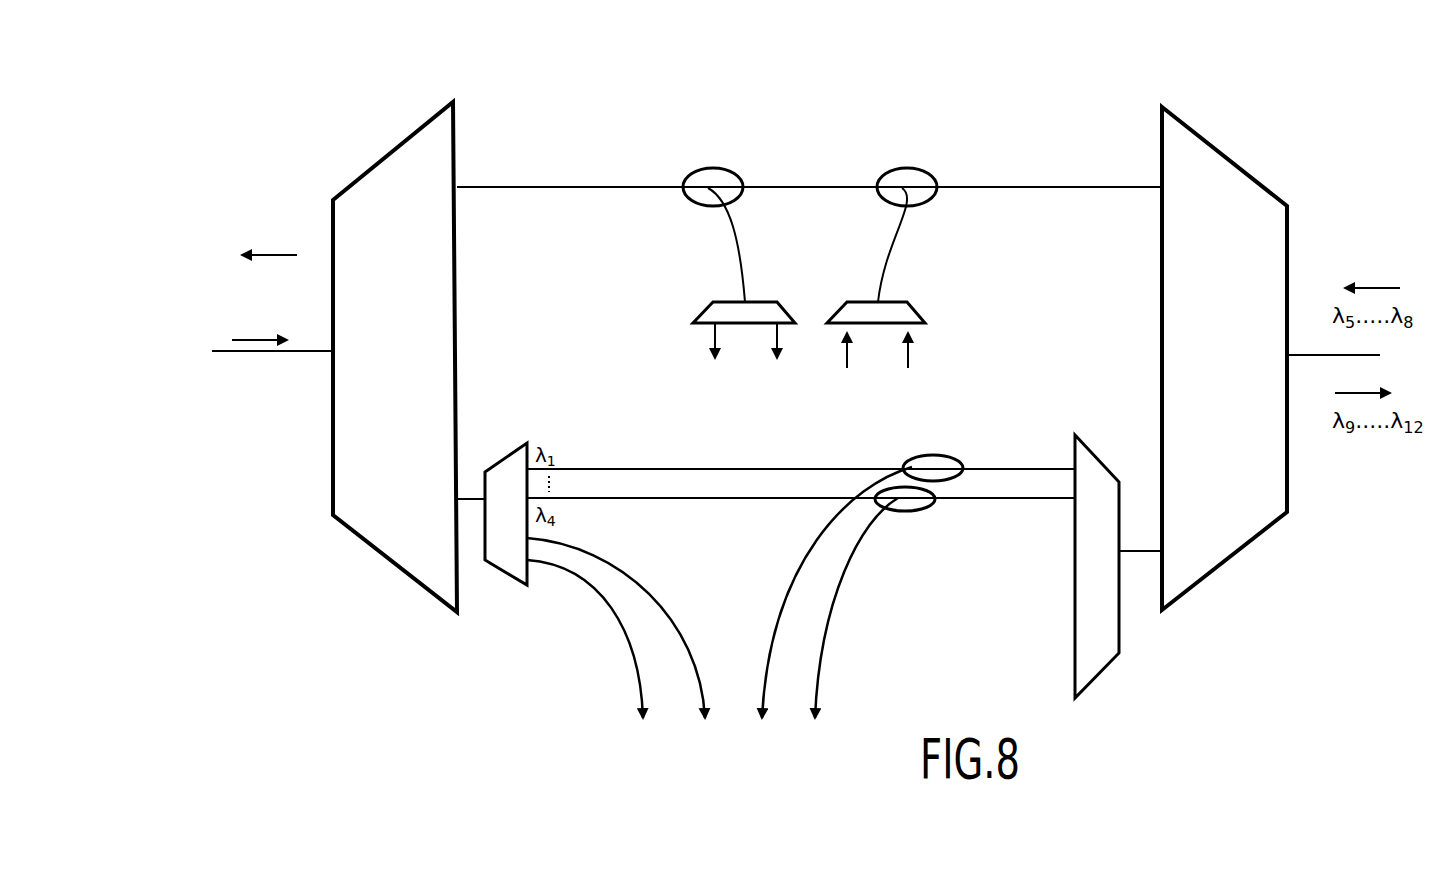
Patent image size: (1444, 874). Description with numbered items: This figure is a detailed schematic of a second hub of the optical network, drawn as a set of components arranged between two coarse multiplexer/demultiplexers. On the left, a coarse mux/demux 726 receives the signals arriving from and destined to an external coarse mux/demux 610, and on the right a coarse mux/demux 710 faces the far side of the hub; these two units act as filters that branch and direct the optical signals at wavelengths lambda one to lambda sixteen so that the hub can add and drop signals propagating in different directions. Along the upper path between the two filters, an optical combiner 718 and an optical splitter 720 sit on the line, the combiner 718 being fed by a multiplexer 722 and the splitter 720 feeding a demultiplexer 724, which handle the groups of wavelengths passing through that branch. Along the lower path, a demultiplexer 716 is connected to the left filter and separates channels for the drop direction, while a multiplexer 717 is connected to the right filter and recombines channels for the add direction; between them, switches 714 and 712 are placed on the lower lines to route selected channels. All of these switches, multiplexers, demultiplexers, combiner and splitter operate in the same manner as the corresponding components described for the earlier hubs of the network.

The coarse mux/demux 610 is at (203, 327).
The coarse mux/demux 710 is at (1237, 165).
The switch 712 is at (918, 510).
The switch 714 is at (933, 452).
The demultiplexer 716 is at (515, 583).
The multiplexer 717 is at (1102, 678).
The optical combiner 718 is at (720, 168).
The optical splitter 720 is at (912, 168).
The multiplexer 722 is at (705, 310).
The demultiplexer 724 is at (915, 310).
The coarse mux/demux 726 is at (390, 152).